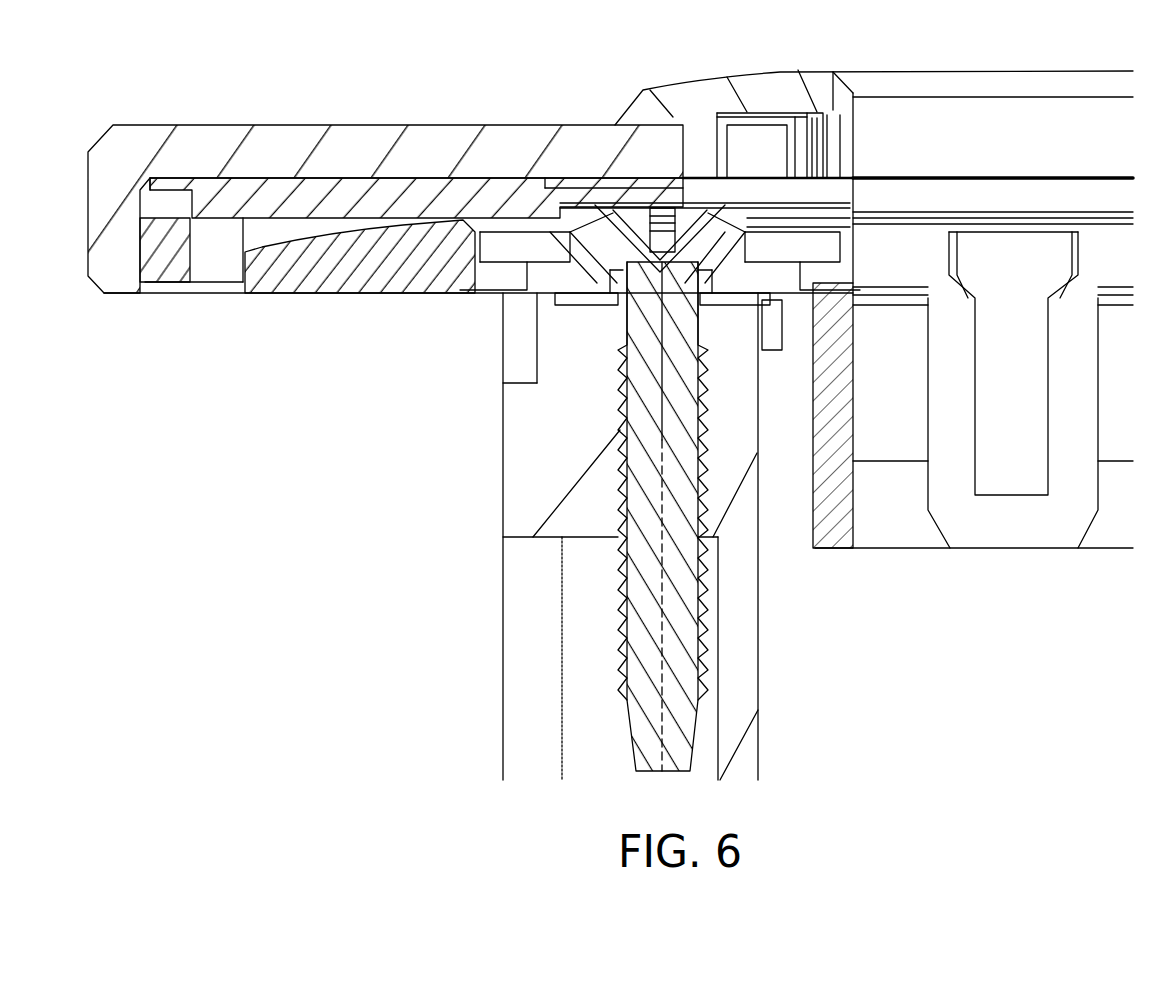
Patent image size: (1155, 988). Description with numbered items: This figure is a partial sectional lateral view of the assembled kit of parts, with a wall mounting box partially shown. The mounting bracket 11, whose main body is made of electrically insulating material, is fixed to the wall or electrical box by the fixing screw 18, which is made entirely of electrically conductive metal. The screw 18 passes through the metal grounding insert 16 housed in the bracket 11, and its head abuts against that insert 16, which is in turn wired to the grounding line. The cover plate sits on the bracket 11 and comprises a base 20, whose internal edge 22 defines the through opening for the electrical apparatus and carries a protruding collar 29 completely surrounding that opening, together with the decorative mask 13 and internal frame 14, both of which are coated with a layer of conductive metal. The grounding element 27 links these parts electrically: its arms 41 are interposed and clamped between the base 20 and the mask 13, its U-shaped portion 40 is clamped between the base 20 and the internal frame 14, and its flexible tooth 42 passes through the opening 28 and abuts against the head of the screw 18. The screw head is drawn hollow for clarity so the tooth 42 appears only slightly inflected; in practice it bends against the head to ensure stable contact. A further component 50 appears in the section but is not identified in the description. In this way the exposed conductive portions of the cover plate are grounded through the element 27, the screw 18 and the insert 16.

The mounting bracket 11 is at (338, 297).
The mask 13 is at (368, 138).
The internal frame 14 is at (648, 97).
The metal grounding insert 16 is at (852, 254).
The fixing screw 18 is at (620, 622).
The base 20 is at (180, 283).
The internal edge 22 is at (852, 196).
The grounding element 27 is at (692, 243).
The opening 28 is at (703, 193).
The protruding collar 29 is at (852, 135).
The U-shaped portion 40 is at (807, 113).
The arms 41 is at (628, 178).
The flexible tooth 42 is at (620, 240).
The support block 50 is at (522, 450).